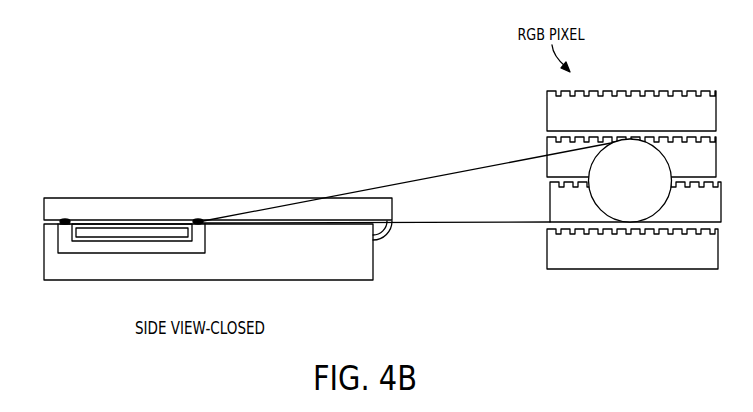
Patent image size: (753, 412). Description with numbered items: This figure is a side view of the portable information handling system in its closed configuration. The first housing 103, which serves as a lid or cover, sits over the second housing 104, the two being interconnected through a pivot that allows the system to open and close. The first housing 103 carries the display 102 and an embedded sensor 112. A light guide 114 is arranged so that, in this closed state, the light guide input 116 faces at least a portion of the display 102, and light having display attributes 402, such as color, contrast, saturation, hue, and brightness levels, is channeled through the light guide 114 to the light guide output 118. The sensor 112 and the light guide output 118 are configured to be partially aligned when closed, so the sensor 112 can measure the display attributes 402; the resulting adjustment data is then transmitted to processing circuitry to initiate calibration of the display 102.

The display 102 is at (198, 219).
The first housing 103 is at (133, 197).
The second housing 104 is at (373, 258).
The sensor 112 is at (65, 219).
The light guide 114 is at (98, 245).
The light guide input 116 is at (198, 225).
The light guide output 118 is at (63, 225).
The display attributes 402 is at (589, 192).